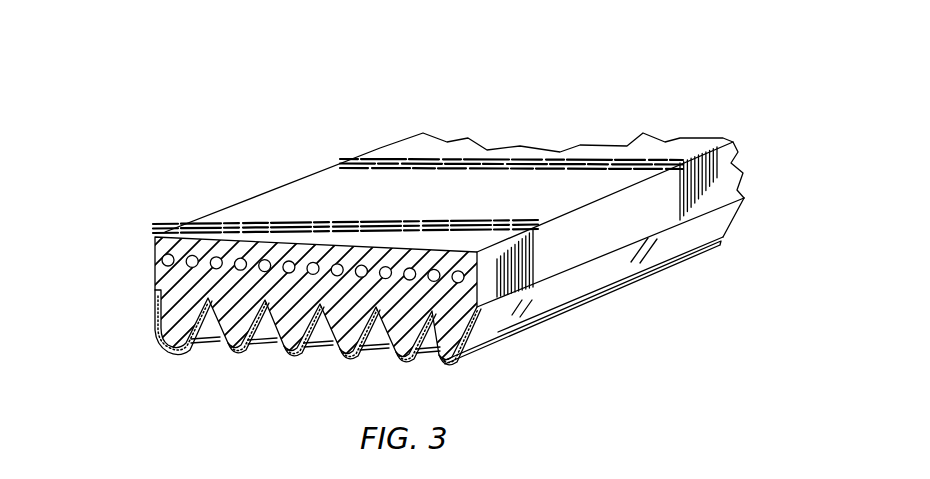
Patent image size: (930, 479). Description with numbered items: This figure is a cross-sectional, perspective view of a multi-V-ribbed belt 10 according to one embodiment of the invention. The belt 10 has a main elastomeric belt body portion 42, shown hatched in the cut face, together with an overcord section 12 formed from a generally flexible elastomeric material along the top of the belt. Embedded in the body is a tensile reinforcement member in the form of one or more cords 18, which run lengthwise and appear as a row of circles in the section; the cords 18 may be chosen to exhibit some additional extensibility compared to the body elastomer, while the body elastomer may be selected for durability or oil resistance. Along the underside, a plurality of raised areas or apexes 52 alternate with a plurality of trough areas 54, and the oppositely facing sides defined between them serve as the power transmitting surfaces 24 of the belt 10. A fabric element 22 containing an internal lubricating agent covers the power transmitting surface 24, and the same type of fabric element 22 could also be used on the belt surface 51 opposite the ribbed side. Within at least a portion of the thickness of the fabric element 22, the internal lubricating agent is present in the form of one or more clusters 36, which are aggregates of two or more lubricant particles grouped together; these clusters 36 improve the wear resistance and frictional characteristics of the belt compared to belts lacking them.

The multi-V-ribbed belt 10 is at (262, 184).
The overcord section 12 is at (467, 187).
The cords 18 is at (197, 265).
The fabric cover element 22 is at (534, 316).
The power transmitting surfaces 24 is at (256, 333).
The cluster 36 is at (357, 335).
The main elastomeric belt body portion 42 is at (172, 283).
The belt surface opposite the power transmitting surface 51 is at (660, 146).
The apexes 52 is at (178, 346).
The trough areas 54 is at (207, 330).